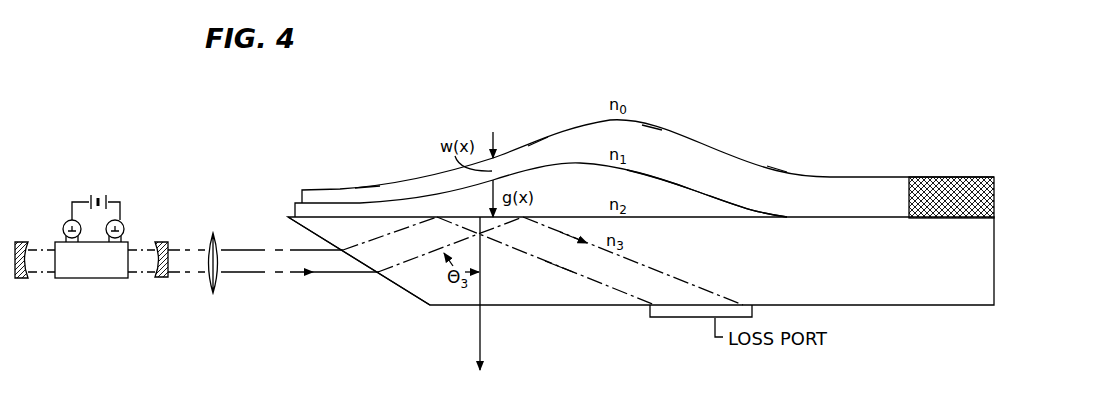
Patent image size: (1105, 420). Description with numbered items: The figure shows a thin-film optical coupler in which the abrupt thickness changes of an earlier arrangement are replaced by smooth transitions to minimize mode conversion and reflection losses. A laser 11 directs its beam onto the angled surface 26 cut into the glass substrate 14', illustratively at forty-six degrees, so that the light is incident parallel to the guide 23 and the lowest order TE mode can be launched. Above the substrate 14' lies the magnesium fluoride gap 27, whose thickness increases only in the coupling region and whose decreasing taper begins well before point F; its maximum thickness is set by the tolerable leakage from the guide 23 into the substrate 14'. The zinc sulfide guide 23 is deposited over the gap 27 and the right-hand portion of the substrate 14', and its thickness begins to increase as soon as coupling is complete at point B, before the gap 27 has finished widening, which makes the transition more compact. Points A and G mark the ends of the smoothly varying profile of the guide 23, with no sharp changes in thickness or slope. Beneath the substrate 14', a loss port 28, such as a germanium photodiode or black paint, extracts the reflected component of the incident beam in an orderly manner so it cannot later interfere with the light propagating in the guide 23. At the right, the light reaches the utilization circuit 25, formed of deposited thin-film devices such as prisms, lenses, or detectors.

The laser 11 is at (98, 309).
The substrate 14' is at (641, 278).
The guide 23 is at (573, 138).
The utilization circuit 25 is at (945, 180).
The surface 26 is at (405, 290).
The gap 27 is at (688, 202).
The loss port 28 is at (678, 313).
The point A on film A is at (367, 187).
The point B is at (538, 142).
The point F is at (652, 128).
The point G on film G is at (777, 168).